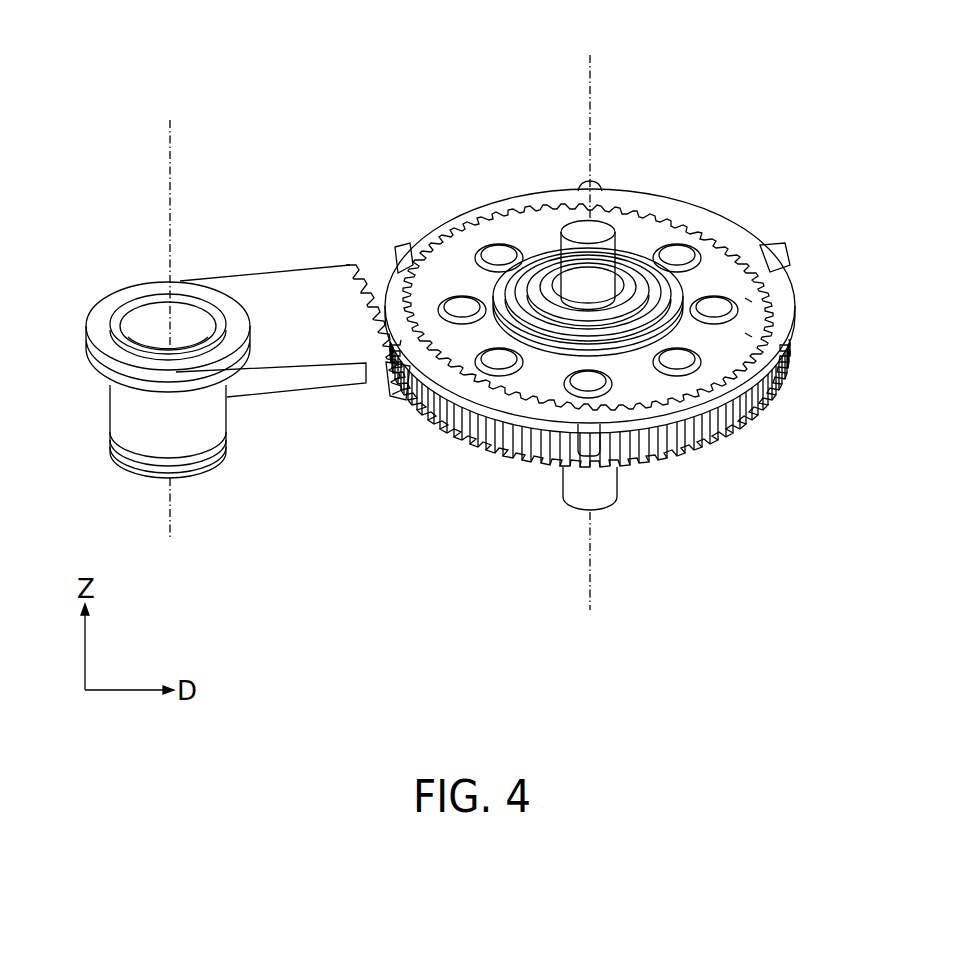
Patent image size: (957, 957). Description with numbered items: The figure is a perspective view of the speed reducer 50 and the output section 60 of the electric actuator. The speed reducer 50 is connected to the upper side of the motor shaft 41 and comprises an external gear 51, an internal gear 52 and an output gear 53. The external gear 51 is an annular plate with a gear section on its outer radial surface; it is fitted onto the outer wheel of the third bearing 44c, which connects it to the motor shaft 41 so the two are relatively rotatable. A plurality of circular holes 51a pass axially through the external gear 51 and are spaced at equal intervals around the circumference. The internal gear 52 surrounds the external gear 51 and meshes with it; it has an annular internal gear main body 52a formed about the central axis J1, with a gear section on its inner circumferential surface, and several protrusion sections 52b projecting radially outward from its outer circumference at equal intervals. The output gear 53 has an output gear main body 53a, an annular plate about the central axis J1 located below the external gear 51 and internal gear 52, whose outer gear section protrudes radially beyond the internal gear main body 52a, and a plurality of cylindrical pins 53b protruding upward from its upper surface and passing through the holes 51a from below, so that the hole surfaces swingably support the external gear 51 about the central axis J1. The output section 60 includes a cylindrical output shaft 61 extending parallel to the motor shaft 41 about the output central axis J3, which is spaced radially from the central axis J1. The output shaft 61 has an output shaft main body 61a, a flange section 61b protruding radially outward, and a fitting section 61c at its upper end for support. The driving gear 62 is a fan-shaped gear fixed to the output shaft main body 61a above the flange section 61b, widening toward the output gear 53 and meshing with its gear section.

The central axis J1 is at (592, 103).
The output central axis J3 is at (165, 190).
The motor shaft 41 is at (614, 494).
The third bearing 44c is at (616, 215).
The speed reducer 50 is at (806, 126).
The external gear 51 is at (642, 226).
The holes 51a is at (712, 297).
The internal gear 52 is at (520, 122).
The internal gear main body 52a is at (503, 200).
The protrusion sections 52b is at (408, 245).
The output gear 53 is at (634, 410).
The output gear main body 53a is at (745, 445).
The pins 53b is at (750, 335).
The output section 60 is at (96, 276).
The output shaft 61 is at (173, 371).
The output shaft main body 61a is at (218, 410).
The flange section 61b is at (115, 392).
The fitting section 61c is at (200, 284).
The driving gear 62 is at (303, 295).